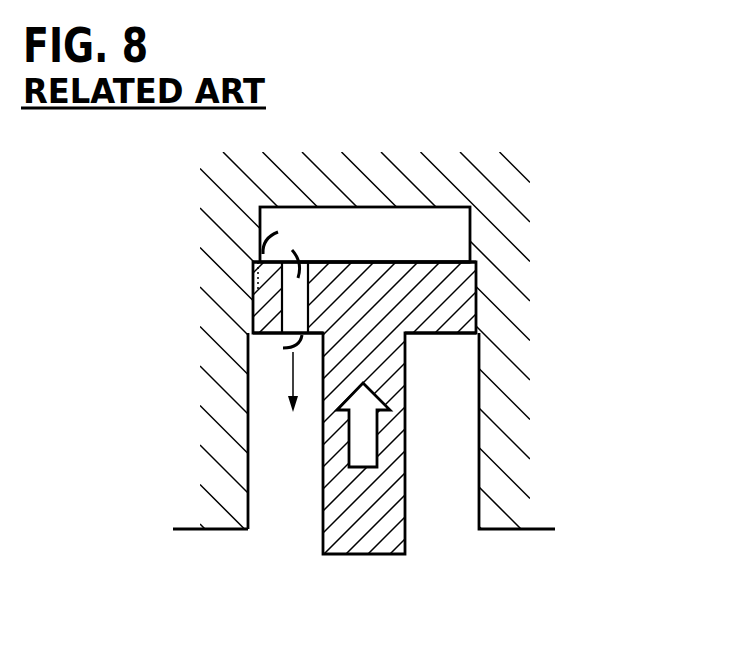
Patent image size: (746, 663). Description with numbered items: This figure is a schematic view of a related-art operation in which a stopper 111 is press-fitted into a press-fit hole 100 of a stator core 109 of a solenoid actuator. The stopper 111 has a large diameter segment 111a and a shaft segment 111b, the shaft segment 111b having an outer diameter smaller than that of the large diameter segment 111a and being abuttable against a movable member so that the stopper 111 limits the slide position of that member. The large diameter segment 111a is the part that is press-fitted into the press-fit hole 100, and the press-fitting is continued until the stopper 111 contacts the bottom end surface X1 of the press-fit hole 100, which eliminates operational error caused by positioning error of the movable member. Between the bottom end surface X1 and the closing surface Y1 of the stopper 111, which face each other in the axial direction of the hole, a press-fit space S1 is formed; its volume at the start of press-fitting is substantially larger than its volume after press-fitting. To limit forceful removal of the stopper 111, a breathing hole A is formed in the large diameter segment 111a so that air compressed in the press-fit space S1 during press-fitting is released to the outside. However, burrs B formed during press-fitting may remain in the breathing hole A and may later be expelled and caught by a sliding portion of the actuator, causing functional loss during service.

The press-fit hole 100 is at (248, 380).
The stator core 109 is at (222, 530).
The stopper 111 is at (632, 335).
The large diameter segment 111a is at (438, 336).
The shaft segment 111b is at (407, 417).
The bottom end surface X1 is at (420, 208).
The closing surface Y1 is at (440, 260).
The press-fit space S1 is at (377, 226).
The breathing hole A is at (293, 300).
The burrs B is at (294, 250).